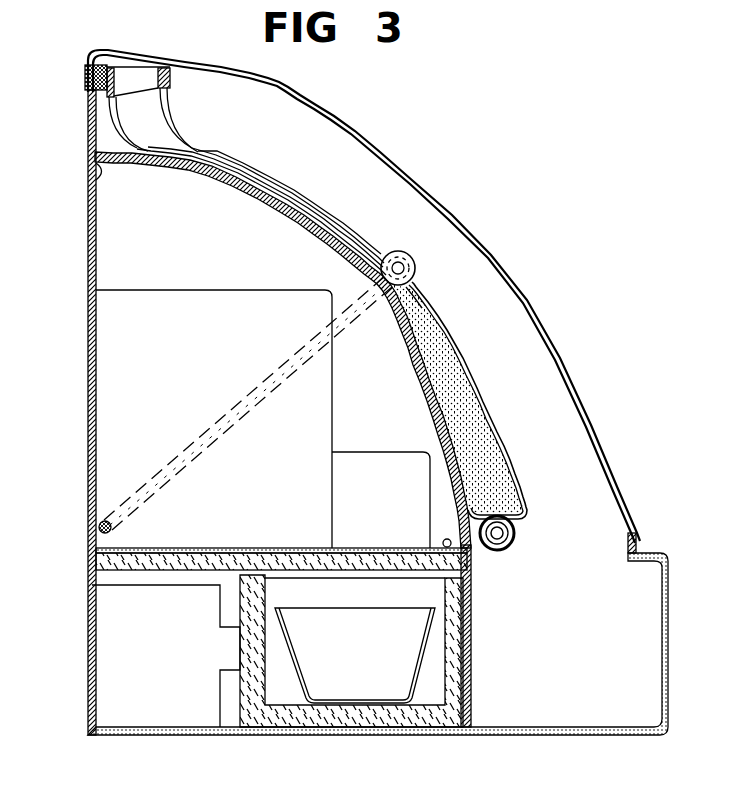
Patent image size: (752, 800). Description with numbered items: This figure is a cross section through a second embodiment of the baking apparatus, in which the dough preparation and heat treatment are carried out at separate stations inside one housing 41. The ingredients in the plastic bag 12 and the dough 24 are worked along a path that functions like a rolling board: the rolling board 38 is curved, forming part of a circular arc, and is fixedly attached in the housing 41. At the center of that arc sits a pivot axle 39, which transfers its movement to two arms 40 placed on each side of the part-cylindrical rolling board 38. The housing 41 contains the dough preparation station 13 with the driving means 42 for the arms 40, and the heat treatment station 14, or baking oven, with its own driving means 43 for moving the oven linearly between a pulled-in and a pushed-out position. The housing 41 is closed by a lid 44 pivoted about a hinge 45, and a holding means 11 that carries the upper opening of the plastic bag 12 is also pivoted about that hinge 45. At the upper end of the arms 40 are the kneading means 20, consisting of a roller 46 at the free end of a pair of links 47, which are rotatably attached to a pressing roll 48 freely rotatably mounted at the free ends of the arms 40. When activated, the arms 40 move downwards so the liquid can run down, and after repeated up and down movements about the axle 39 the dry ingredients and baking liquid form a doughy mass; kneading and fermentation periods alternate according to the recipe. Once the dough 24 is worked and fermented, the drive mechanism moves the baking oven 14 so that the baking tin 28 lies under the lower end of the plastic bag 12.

The holding means 11 is at (131, 74).
The plastic bag 12 is at (107, 108).
The dough preparation station 13 is at (465, 341).
The heat treatment station 14 is at (281, 692).
The kneading means 20 is at (445, 309).
The dough 24 is at (510, 487).
The baking tin 28 is at (416, 690).
The rolling board 38 is at (300, 228).
The pivot axle 39 is at (99, 527).
The arms 40 is at (352, 312).
The housing 41 is at (87, 437).
The driving means 42 is at (316, 427).
The driving means 43 is at (158, 717).
The lid 44 is at (338, 108).
The hinge 45 is at (92, 62).
The roller 46 is at (507, 548).
The links 47 is at (420, 297).
The pressing roll 48 is at (406, 256).